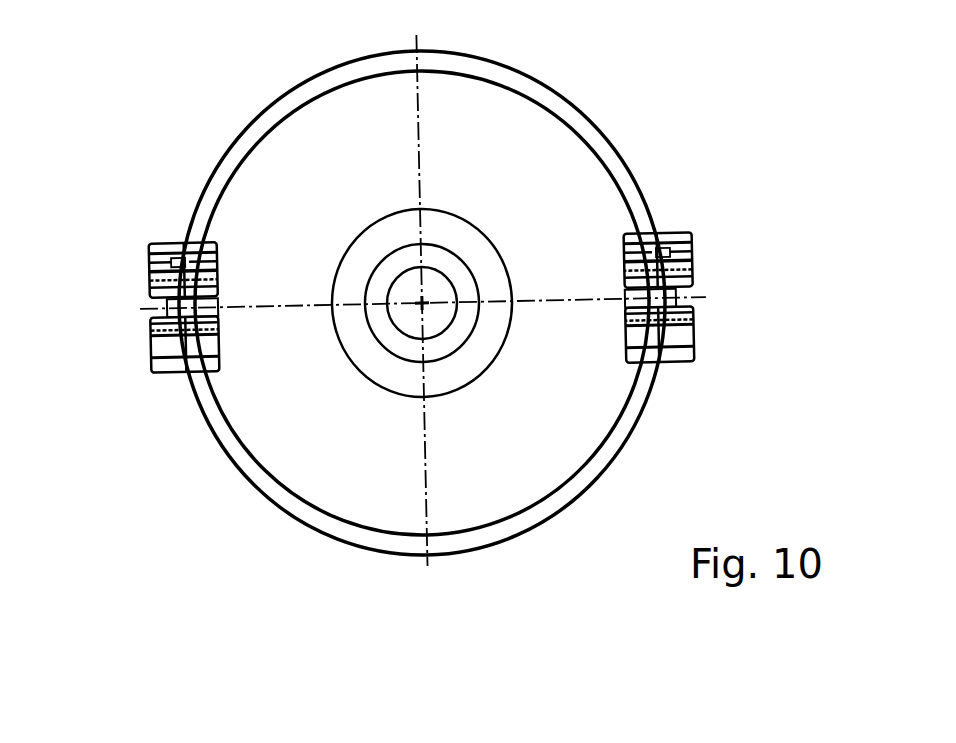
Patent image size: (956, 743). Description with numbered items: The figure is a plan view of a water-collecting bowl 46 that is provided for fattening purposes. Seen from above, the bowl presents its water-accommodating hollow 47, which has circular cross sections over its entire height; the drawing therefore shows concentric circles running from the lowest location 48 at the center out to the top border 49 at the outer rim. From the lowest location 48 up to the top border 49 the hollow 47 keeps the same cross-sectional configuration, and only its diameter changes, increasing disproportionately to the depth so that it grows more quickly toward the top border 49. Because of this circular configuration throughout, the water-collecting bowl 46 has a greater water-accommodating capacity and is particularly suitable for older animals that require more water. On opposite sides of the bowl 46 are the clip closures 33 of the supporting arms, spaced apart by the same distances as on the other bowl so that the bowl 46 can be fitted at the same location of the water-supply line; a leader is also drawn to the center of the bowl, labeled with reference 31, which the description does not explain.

The axis of rotation 31 is at (422, 303).
The clip closure 33 is at (168, 350).
The water-collecting bowl 46 is at (648, 137).
The water-accommodating hollow 47 is at (537, 444).
The lowest location 48 is at (418, 312).
The top border 49 is at (586, 123).